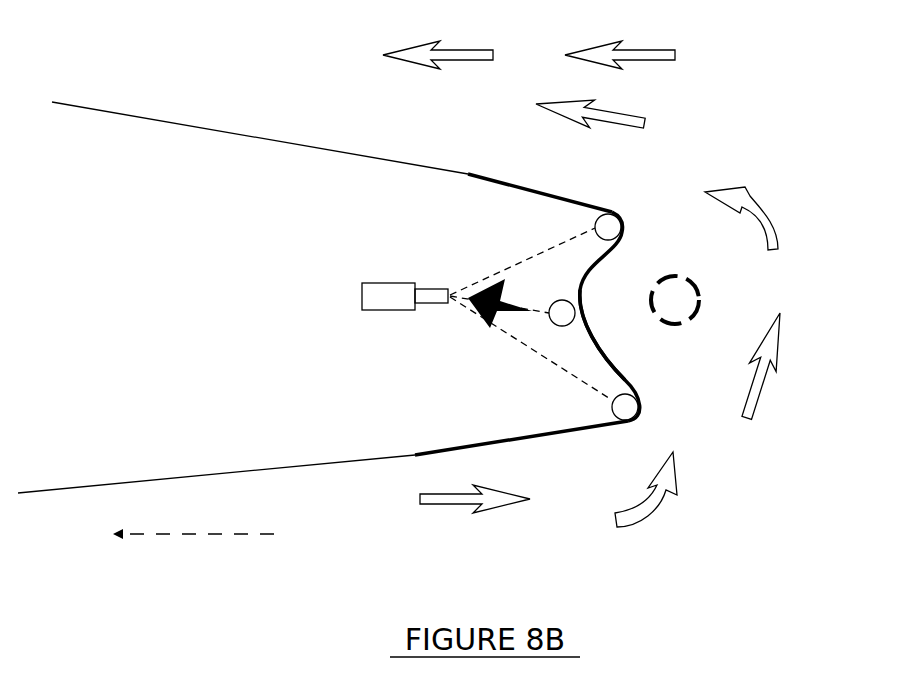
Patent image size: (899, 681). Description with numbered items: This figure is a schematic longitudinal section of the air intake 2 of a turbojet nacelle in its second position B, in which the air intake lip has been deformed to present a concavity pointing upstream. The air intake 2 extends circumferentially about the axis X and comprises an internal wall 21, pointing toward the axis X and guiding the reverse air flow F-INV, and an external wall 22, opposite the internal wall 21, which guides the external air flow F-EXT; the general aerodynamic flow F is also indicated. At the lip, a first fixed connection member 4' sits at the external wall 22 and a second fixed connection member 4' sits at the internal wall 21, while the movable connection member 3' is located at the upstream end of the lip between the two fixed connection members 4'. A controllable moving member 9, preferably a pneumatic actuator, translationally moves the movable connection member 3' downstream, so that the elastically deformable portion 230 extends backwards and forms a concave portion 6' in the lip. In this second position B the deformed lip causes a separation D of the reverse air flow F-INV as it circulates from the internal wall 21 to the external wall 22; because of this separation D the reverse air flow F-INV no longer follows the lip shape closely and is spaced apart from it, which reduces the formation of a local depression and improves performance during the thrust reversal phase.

The air intake 2 is at (397, 144).
The external wall 22 is at (438, 168).
The internal wall 21 is at (415, 456).
The movable connection member 3' is at (610, 316).
The fixed connection member 4' is at (647, 290).
The concave portion 6' is at (612, 280).
The elastically deformable portion 230 is at (608, 372).
The controllable moving member 9 is at (362, 296).
The separation D is at (699, 292).
The second position B is at (256, 66).
The axis X is at (183, 535).
The external air flow F-EXT is at (438, 39).
The aerodynamic force F is at (620, 39).
The reverse air flow F-INV is at (629, 317).